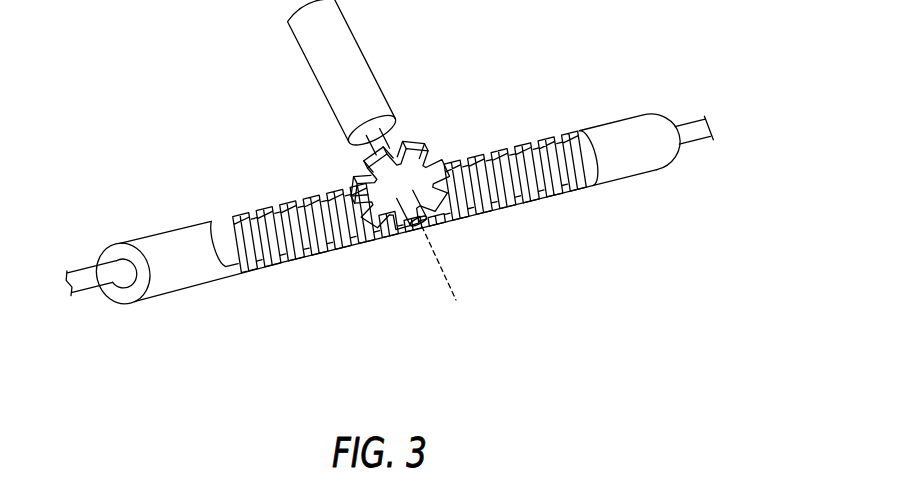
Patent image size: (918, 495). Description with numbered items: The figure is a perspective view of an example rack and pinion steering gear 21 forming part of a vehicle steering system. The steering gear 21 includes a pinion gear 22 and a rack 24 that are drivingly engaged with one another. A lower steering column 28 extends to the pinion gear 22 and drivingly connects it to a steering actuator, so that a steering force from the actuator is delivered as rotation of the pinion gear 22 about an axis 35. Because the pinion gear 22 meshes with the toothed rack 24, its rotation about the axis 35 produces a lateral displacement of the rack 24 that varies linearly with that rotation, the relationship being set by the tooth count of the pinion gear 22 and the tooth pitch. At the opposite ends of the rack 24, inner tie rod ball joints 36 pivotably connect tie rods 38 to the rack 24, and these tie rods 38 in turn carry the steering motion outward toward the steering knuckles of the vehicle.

The rack and pinion steering gear 21 is at (388, 209).
The pinion gear 22 is at (407, 145).
The rack 24 is at (602, 125).
The lower steering column 28 is at (352, 137).
The axis 35 is at (451, 290).
The inner tie rod ball joint 36 is at (128, 283).
The tie rod 38 is at (78, 274).